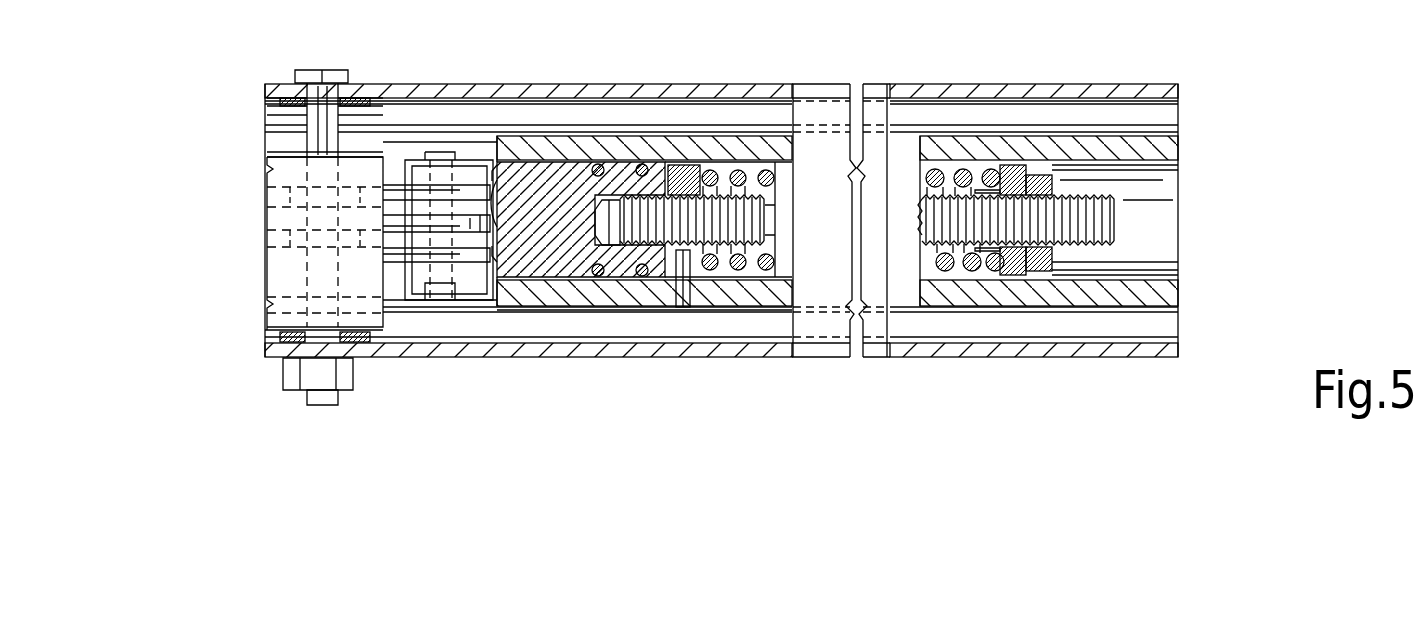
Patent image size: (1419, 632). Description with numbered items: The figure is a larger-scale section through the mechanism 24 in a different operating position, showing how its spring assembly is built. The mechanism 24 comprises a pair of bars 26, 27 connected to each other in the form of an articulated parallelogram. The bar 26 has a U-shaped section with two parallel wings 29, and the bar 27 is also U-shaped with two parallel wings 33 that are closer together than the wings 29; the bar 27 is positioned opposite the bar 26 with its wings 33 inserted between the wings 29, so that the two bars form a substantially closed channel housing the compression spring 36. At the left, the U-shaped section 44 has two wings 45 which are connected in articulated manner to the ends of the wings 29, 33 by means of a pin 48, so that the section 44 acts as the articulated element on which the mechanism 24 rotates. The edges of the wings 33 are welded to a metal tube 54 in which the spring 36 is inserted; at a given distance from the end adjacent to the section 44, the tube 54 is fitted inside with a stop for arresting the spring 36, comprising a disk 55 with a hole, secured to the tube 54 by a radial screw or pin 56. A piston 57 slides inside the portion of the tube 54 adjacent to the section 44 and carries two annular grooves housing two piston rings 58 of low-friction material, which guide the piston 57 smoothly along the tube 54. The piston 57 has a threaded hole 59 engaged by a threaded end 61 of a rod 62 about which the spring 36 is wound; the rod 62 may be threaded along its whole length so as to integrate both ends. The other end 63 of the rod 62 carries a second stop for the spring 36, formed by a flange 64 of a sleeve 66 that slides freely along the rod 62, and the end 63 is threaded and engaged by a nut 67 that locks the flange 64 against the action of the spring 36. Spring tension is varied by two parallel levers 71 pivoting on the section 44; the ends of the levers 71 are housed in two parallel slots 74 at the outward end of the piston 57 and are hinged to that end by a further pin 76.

The mechanism 24 is at (346, 60).
The bar 26 is at (438, 82).
The bar 27 is at (538, 316).
The wings 29 is at (490, 96).
The wings 33 is at (1032, 130).
The compression spring 36 is at (738, 170).
The U-shaped section 44 is at (272, 278).
The wings 45 is at (268, 108).
The pin 48 is at (282, 360).
The metal tube 54 is at (1122, 150).
The disk 55 is at (684, 164).
The radial screw or pin 56 is at (681, 308).
The piston 57 is at (562, 188).
The piston rings 58 is at (640, 277).
The threaded hole 59 is at (629, 205).
The threaded end 61 is at (656, 190).
The rod 62 is at (935, 217).
The end 63 is at (1117, 222).
The flange 64 is at (1007, 270).
The sleeve 66 is at (982, 268).
The nut 67 is at (1053, 262).
The levers 71 is at (288, 243).
The slots 74 is at (493, 178).
The pin 76 is at (441, 172).